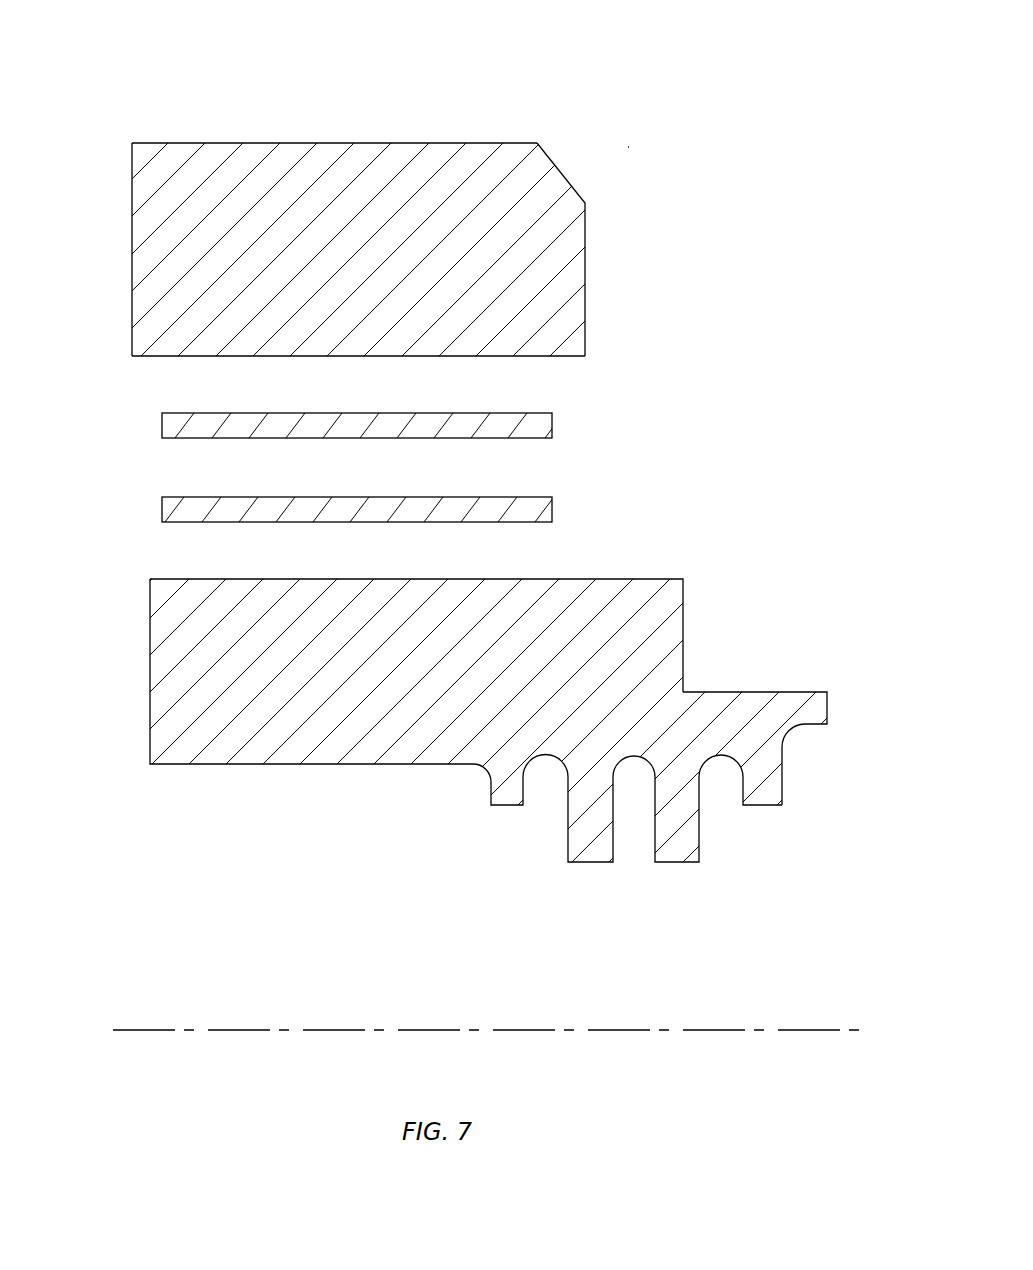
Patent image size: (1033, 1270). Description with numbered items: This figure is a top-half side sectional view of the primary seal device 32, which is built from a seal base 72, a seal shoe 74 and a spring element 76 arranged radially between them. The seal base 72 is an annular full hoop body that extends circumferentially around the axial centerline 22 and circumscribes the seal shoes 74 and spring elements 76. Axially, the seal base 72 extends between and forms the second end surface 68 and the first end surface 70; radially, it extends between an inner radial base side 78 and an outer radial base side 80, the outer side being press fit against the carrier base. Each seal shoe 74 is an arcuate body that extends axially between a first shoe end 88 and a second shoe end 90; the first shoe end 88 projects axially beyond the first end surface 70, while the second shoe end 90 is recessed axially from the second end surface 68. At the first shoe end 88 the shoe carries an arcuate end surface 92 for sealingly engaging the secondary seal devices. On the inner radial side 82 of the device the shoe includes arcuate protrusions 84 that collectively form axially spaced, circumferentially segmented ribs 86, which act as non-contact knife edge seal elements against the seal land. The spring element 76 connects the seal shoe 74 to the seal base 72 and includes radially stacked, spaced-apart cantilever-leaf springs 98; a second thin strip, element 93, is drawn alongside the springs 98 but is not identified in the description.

The axial centerline 22 is at (852, 1030).
The primary seal device 32 is at (632, 143).
The second end surface 68 is at (132, 252).
The first end surface 70 is at (585, 262).
The seal base 72 is at (400, 233).
The seal shoe 74 is at (516, 762).
The spring element 76 is at (362, 484).
The inner radial base side 78 is at (148, 362).
The outer radial base side 80 is at (177, 143).
The inner radial side 82 is at (526, 852).
The arcuate protrusion 84 is at (503, 805).
The rib 86 is at (673, 862).
The first shoe end 88 is at (827, 703).
The second shoe end 90 is at (150, 742).
The arcuate end surface 92 is at (683, 632).
The first intermediate layer 93 is at (146, 419).
The spring 98 is at (146, 513).